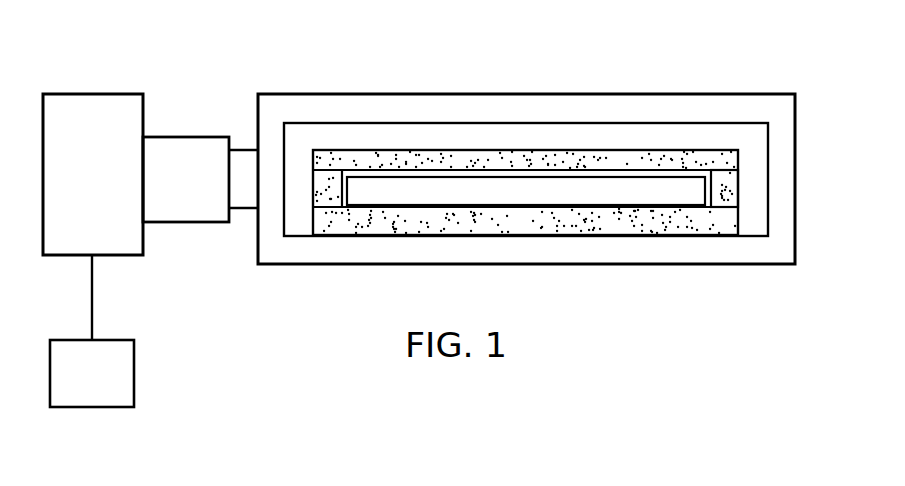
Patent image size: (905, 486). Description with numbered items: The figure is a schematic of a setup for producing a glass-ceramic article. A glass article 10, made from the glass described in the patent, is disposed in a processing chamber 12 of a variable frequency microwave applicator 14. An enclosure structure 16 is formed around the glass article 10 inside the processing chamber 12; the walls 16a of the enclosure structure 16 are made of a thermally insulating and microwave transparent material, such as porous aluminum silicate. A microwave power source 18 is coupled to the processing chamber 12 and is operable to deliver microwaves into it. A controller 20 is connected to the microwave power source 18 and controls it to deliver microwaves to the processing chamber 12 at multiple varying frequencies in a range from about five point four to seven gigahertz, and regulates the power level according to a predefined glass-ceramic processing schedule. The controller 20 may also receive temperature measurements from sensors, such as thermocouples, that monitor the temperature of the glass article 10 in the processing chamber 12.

The glass article 10 is at (639, 193).
The processing chamber 12 is at (621, 135).
The variable frequency microwave applicator 14 is at (517, 86).
The enclosure structure 16 is at (674, 152).
The walls 16a is at (733, 188).
The microwave power source 18 is at (88, 105).
The controller 20 is at (90, 396).